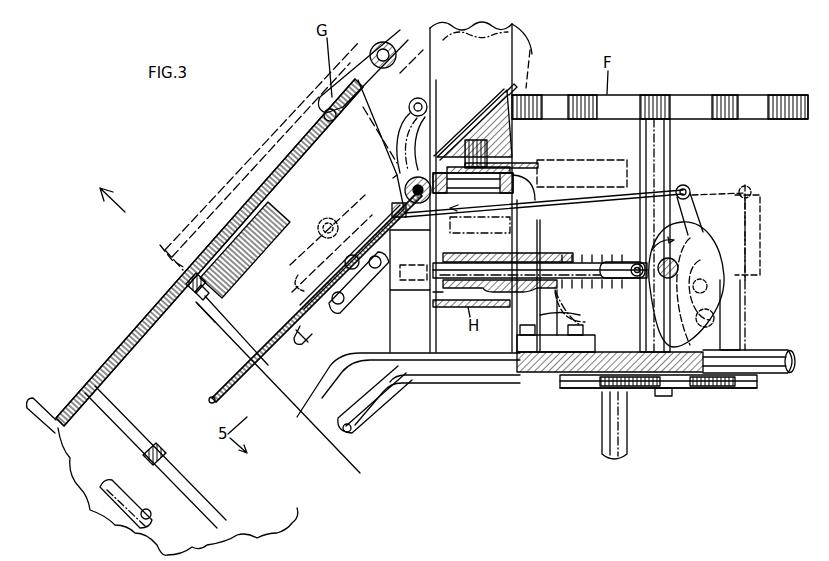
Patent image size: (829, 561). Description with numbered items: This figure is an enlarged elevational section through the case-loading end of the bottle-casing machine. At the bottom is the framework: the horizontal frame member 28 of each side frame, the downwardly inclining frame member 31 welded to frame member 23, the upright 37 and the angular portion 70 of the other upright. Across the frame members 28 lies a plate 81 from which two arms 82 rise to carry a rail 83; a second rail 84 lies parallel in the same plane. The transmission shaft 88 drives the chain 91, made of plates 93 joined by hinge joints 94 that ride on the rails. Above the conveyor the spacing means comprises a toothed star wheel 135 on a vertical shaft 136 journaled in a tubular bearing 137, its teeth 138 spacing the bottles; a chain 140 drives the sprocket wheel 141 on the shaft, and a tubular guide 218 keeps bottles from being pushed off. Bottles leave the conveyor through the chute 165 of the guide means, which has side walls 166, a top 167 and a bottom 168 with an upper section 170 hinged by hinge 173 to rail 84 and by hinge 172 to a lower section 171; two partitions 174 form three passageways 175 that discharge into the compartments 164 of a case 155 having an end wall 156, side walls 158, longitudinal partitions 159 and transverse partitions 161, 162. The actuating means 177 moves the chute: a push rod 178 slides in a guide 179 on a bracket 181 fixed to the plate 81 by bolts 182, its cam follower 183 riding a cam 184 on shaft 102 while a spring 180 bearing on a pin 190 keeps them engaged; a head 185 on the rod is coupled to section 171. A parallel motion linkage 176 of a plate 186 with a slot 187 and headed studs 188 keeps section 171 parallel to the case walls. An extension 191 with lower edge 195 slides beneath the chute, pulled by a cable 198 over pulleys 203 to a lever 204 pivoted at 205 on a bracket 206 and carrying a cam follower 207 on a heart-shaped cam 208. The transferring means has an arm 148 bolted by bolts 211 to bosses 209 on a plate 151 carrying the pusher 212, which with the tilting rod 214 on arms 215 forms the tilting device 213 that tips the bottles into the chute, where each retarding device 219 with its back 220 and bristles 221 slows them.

The frame member 23 is at (135, 507).
The horizontal frame member 28 is at (460, 376).
The downwardly inclining frame member 31 is at (310, 410).
The upright 37 is at (620, 436).
The angular portion 70 is at (362, 424).
The plate 81 is at (546, 372).
The arms 82 is at (520, 238).
The rail 83 is at (640, 192).
The rail 84 is at (440, 172).
The shaft 88 is at (525, 213).
The chain 91 is at (432, 322).
The plates 93 is at (493, 308).
The hinge joints 94 is at (458, 308).
The shaft 102 is at (720, 265).
The toothed star wheel 135 is at (745, 100).
The vertical shaft 136 is at (664, 397).
The tubular bearing 137 is at (660, 153).
The teeth 138 is at (714, 97).
The chain 140 is at (700, 389).
The sprocket wheel 141 is at (744, 389).
The arm 148 is at (536, 167).
The plate 151 is at (490, 163).
The cases 155 is at (94, 384).
The end wall 156 is at (133, 342).
The side walls 158 is at (272, 470).
The longitudinal partitions 159 is at (122, 428).
The transverse partition 161 is at (162, 462).
The transverse partition 162 is at (240, 512).
The compartments 164 is at (136, 441).
The chute 165 is at (266, 154).
The side walls 166 is at (280, 208).
The top 167 is at (254, 207).
The bottom 168 is at (306, 300).
The upper section 170 is at (368, 216).
The lower section 171 is at (270, 330).
The hinge 172 is at (339, 300).
The hinge 173 is at (383, 158).
The partitions 174 is at (310, 150).
The passageways 175 is at (284, 170).
The parallel motion linkage 176 is at (297, 340).
The actuating means 177 is at (440, 263).
The push rod 178 is at (620, 264).
The guide 179 is at (566, 258).
The spring 180 is at (605, 292).
The bracket 181 is at (580, 318).
The bolts 182 is at (527, 355).
The cam follower 183 is at (640, 250).
The cam 184 is at (712, 294).
The head 185 is at (398, 286).
The plate 186 is at (330, 315).
The slot 187 is at (309, 340).
The headed studs 188 is at (362, 270).
The pin 190 is at (686, 284).
The extension 191 is at (230, 384).
The lower edge 195 is at (212, 403).
The cable 198 is at (650, 183).
The pulleys 203 is at (404, 218).
The lever 204 is at (692, 210).
The pivot 205 is at (740, 284).
The bracket 206 is at (712, 323).
The cam follower 207 is at (712, 282).
The heart-shaped cam 208 is at (690, 250).
The bosses 209 is at (480, 135).
The bolts 211 is at (453, 154).
The pusher 212 is at (512, 82).
The tilting device 213 is at (360, 50).
The tilting rod 214 is at (392, 52).
The arms 215 is at (332, 80).
The guide 218 is at (405, 112).
The retarding device 219 is at (220, 262).
The back 220 is at (197, 278).
The bristles 221 is at (198, 312).